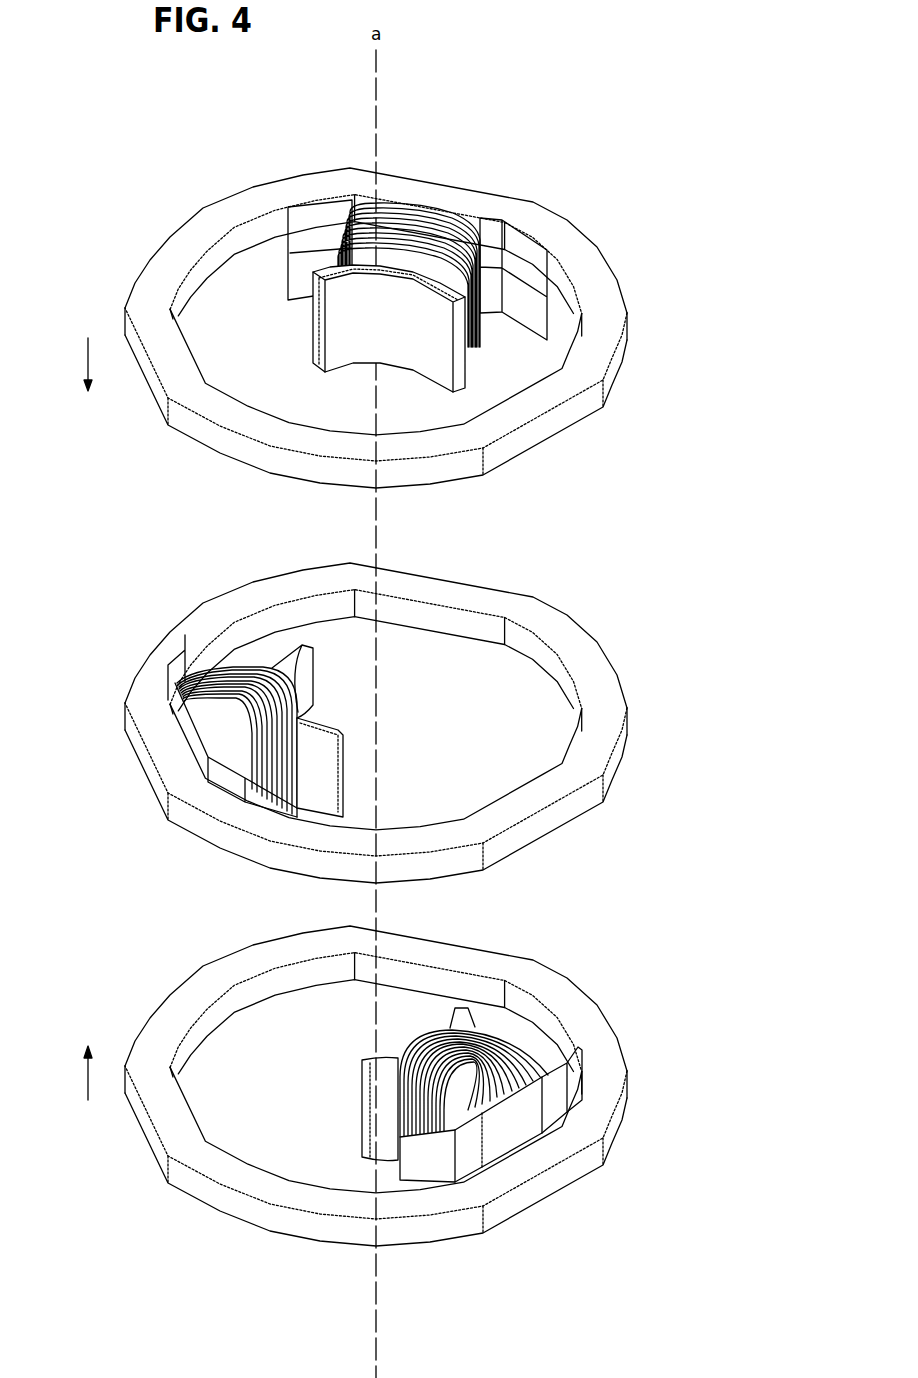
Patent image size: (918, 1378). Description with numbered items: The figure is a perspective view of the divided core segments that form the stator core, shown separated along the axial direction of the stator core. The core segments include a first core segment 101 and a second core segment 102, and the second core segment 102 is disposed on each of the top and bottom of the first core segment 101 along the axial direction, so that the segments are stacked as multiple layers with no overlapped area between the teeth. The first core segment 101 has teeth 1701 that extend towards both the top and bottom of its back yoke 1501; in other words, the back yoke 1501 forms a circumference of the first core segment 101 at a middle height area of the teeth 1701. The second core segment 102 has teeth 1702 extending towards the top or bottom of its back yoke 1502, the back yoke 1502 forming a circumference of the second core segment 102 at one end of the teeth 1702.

The second core segment 102 is at (336, 299).
The back yoke 1502 is at (165, 252).
The teeth 1702 is at (410, 293).
The first core segment 101 is at (334, 742).
The back yoke 1501 is at (160, 735).
The teeth 1701 is at (320, 778).